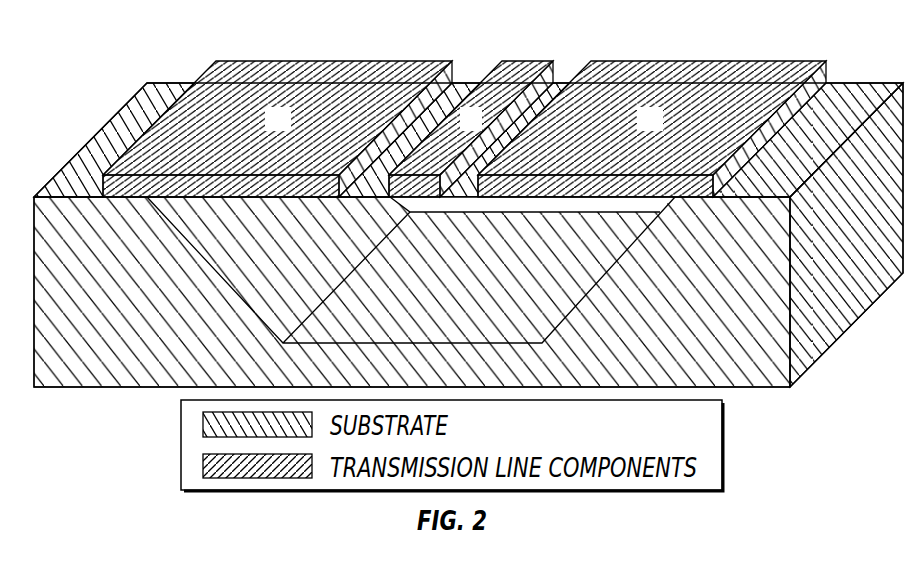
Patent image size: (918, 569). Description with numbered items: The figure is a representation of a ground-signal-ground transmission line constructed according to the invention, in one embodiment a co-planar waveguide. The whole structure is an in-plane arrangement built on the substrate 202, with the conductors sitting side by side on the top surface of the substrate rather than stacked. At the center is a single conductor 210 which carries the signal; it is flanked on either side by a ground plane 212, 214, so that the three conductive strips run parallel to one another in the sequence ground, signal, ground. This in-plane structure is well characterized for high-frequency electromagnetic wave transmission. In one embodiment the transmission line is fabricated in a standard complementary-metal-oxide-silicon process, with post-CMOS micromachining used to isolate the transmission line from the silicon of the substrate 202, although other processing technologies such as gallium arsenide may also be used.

The substrate 202 is at (98, 372).
The conductor 210 is at (525, 60).
The ground plane 212 is at (312, 60).
The ground plane 214 is at (690, 60).